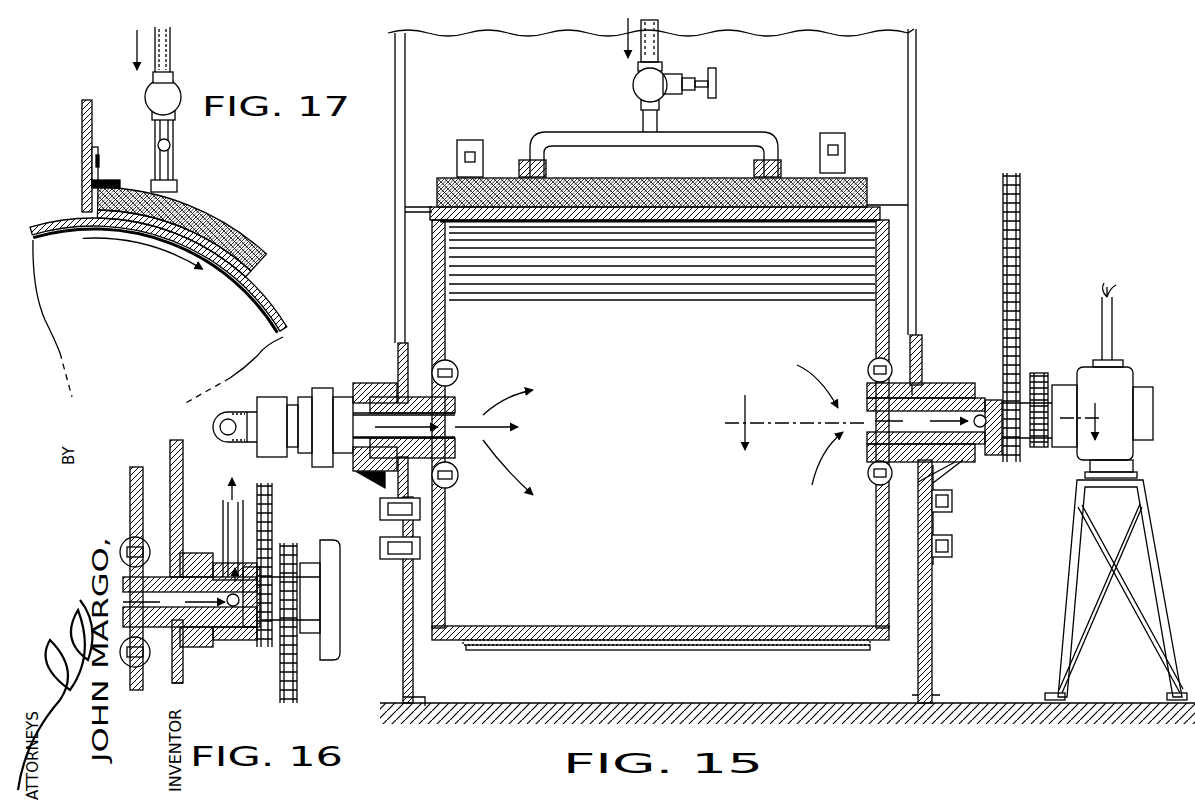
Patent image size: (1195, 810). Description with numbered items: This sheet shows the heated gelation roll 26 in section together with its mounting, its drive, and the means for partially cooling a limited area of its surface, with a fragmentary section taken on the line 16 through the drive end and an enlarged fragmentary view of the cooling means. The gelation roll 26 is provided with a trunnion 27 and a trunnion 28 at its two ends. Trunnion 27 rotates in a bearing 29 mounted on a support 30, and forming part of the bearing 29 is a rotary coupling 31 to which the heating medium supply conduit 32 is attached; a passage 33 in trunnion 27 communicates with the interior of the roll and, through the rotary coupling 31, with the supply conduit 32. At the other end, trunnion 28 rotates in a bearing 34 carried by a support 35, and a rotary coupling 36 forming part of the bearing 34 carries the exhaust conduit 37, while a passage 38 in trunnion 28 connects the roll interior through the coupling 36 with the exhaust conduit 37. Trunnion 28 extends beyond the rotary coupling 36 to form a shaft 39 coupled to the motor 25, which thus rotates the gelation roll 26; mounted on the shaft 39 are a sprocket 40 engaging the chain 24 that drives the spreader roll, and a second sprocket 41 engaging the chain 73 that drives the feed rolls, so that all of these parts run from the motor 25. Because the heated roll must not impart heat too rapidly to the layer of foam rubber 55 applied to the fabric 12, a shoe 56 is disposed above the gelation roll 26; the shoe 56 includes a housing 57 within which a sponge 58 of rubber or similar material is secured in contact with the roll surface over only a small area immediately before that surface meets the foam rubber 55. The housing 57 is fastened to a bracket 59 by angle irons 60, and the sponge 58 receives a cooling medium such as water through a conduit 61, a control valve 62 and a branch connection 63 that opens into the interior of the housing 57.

In FIG. 15, the fabric 12 is at (733, 648).
In FIG. 15, the section line 16— 16 is at (911, 422).
In FIG. 16, the chain 24 is at (297, 693).
In FIG. 15, the motor 25 is at (1097, 378).
In FIG. 16, the motor 25 is at (327, 543).
In FIG. 15, the gelation roll 26 is at (873, 562).
In FIG. 17, the gelation roll 26 is at (273, 306).
In FIG. 15, the trunnion 27 is at (413, 387).
In FIG. 15, the trunnion 28 is at (925, 358).
In FIG. 16, the trunnion 28 is at (160, 573).
In FIG. 15, the bearing 29 is at (365, 382).
In FIG. 15, the support 30 is at (402, 598).
In FIG. 15, the rotary coupling 31 is at (320, 390).
In FIG. 15, the heating medium supply conduit 32 is at (226, 412).
In FIG. 15, the passage 33 is at (455, 432).
In FIG. 15, the bearing 34 is at (938, 383).
In FIG. 16, the bearing 34 is at (195, 563).
In FIG. 15, the support 35 is at (935, 605).
In FIG. 16, the support 35 is at (183, 667).
In FIG. 15, the rotary coupling 36 is at (990, 462).
In FIG. 16, the rotary coupling 36 is at (222, 553).
In FIG. 16, the exhaust conduit 37 is at (216, 530).
In FIG. 15, the passage 38 is at (863, 413).
In FIG. 16, the passage 38 is at (122, 555).
In FIG. 16, the shaft 39 is at (300, 610).
In FIG. 15, the sprocket 40 is at (1047, 457).
In FIG. 16, the sprocket 40 is at (293, 547).
In FIG. 15, the second sprocket 41 is at (1020, 460).
In FIG. 16, the second sprocket 41 is at (263, 640).
In FIG. 15, the layer of foam rubber 55 is at (648, 645).
In FIG. 15, the shoe 56 is at (860, 178).
In FIG. 17, the shoe 56 is at (205, 210).
In FIG. 15, the housing 57 is at (490, 178).
In FIG. 17, the housing 57 is at (236, 242).
In FIG. 15, the sponge 58 is at (668, 212).
In FIG. 17, the sponge 58 is at (228, 273).
In FIG. 15, the bracket 59 is at (525, 97).
In FIG. 17, the bracket 59 is at (82, 117).
In FIG. 15, the angle irons 60 is at (462, 140).
In FIG. 17, the angle irons 60 is at (90, 179).
In FIG. 17, the conduit 61 is at (171, 45).
In FIG. 17, the control valve 62 is at (178, 95).
In FIG. 15, the branch connection 63 is at (715, 145).
In FIG. 17, the branch connection 63 is at (170, 163).
In FIG. 15, the chain 73 is at (1020, 236).